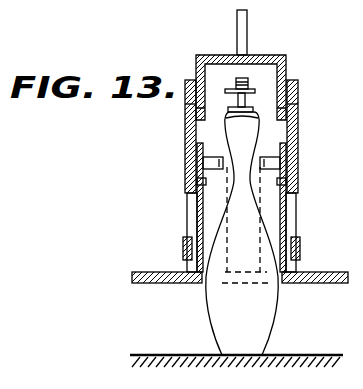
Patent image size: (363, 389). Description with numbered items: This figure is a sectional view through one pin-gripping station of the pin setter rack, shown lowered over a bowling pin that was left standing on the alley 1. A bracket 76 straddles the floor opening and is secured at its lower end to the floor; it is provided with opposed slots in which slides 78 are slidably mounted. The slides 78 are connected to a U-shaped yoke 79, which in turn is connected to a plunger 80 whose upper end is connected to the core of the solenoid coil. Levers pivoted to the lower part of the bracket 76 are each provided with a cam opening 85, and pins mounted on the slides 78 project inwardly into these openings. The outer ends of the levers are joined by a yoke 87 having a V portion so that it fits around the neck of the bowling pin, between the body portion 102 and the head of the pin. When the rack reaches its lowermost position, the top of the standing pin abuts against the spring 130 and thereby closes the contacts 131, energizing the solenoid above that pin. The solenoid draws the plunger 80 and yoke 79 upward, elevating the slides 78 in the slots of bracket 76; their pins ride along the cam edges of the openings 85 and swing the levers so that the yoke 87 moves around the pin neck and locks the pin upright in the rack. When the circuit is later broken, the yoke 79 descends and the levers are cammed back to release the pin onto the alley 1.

The alley 1 is at (307, 353).
The bracket 76 is at (292, 82).
The slides 78 is at (187, 142).
The U-shaped yoke 79 is at (259, 55).
The plunger 80 is at (237, 32).
The cam opening 85 is at (193, 195).
The yoke 87 is at (263, 160).
The body portion 102 is at (222, 310).
The spring 130 is at (228, 113).
The contacts 131 is at (237, 106).